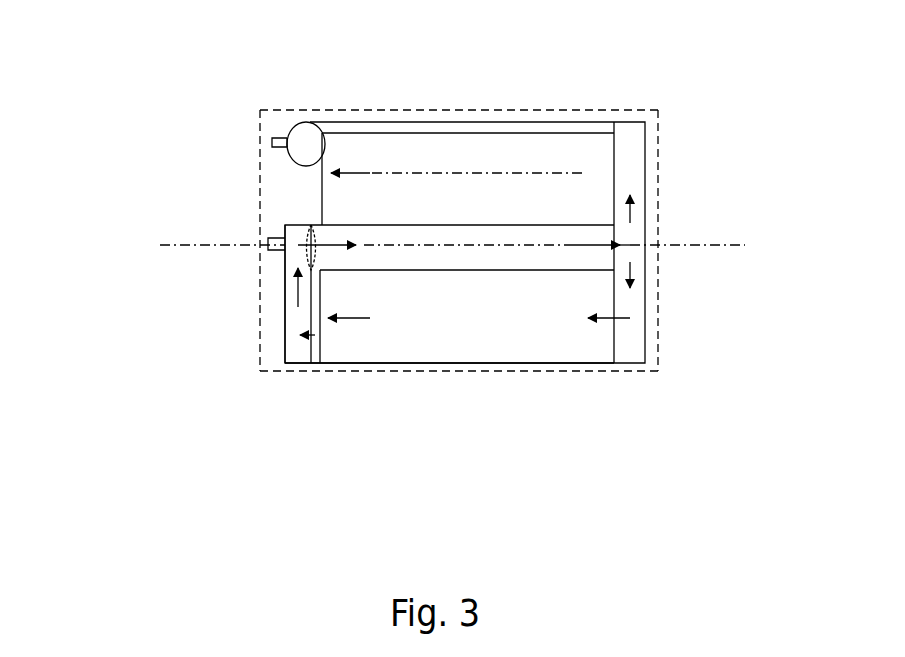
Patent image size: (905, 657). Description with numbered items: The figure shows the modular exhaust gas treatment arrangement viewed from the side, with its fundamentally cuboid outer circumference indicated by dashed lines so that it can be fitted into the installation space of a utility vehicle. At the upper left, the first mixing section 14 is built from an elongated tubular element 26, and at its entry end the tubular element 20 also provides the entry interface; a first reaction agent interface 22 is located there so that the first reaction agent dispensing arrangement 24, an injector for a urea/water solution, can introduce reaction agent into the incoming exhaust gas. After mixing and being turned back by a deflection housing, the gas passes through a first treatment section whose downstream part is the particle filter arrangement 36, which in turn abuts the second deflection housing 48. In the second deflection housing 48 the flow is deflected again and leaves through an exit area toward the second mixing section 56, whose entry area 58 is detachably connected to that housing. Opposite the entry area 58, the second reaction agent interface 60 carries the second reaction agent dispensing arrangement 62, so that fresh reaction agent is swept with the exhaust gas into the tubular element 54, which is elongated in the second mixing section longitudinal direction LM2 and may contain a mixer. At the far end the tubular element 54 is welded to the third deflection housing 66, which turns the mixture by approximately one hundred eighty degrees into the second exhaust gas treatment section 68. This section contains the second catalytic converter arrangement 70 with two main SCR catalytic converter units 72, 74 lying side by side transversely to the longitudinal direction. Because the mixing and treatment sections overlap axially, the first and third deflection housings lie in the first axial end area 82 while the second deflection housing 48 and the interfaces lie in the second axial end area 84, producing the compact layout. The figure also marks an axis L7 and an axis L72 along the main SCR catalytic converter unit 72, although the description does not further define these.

The first mixing section 14 is at (463, 112).
The tubular element 20 is at (298, 122).
The first reaction agent interface 22 is at (287, 136).
The first reaction agent dispensing arrangement 24 is at (270, 142).
The tubular element 26 is at (397, 111).
The particle filter arrangement 36 is at (312, 356).
The second deflection housing 48 is at (285, 306).
The tubular element 54 is at (553, 237).
The second mixing section 56 is at (507, 223).
The entry area 58 is at (322, 225).
The second reaction agent interface 60 is at (302, 240).
The second reaction agent dispensing arrangement 62 is at (268, 248).
The third deflection housing 66 is at (645, 302).
The second exhaust gas treatment section 68 is at (594, 378).
The second catalytic converter arrangement 70 is at (433, 363).
The main SCR catalytic converter unit 72 is at (493, 152).
The main SCR catalytic converter unit 74 is at (503, 347).
The first axial end area 82 is at (696, 386).
The second axial end area 84 is at (256, 382).
The longitudinal axis L7 is at (175, 243).
The axis of top wall L72 is at (523, 175).
The second mixing section longitudinal direction LM2 is at (537, 247).